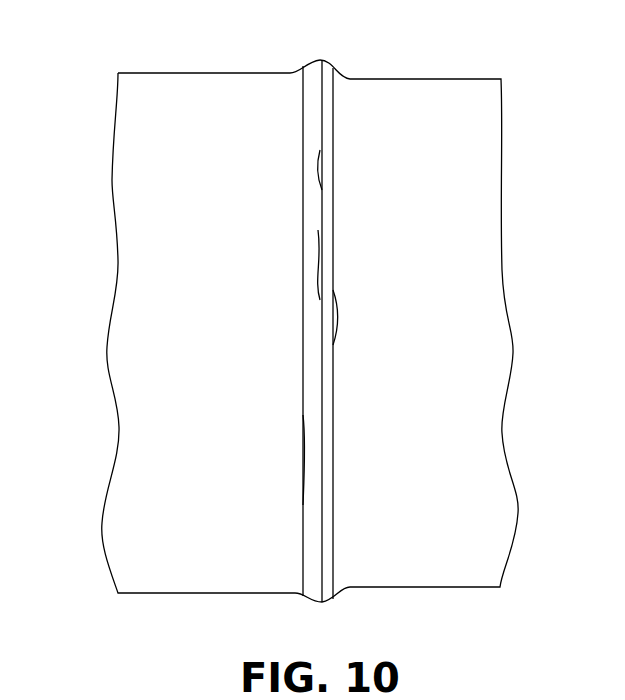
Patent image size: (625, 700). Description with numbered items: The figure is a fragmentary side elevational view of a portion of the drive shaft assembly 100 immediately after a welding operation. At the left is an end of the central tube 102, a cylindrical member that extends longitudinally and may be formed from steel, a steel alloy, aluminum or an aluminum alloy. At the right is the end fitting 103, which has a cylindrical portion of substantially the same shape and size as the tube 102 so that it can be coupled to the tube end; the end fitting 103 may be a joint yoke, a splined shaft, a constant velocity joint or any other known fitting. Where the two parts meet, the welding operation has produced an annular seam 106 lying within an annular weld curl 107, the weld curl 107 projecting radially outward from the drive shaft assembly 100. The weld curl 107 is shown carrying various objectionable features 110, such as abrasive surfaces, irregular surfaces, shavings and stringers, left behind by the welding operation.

The drive shaft assembly 100 is at (290, 311).
The central tube 102 is at (193, 125).
The end fitting 103 is at (435, 128).
The annular seam 106 is at (323, 262).
The weld curl 107 is at (343, 57).
The objectionable features 110 is at (320, 188).